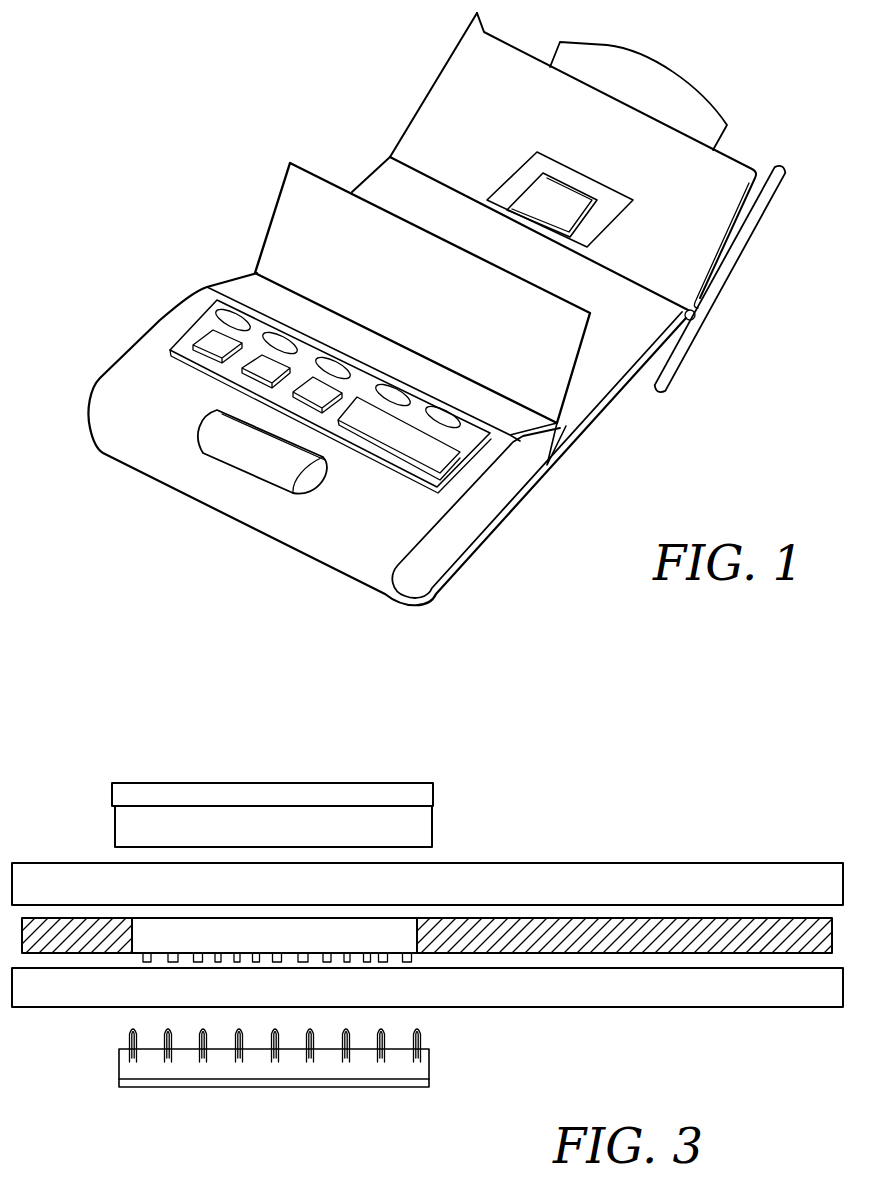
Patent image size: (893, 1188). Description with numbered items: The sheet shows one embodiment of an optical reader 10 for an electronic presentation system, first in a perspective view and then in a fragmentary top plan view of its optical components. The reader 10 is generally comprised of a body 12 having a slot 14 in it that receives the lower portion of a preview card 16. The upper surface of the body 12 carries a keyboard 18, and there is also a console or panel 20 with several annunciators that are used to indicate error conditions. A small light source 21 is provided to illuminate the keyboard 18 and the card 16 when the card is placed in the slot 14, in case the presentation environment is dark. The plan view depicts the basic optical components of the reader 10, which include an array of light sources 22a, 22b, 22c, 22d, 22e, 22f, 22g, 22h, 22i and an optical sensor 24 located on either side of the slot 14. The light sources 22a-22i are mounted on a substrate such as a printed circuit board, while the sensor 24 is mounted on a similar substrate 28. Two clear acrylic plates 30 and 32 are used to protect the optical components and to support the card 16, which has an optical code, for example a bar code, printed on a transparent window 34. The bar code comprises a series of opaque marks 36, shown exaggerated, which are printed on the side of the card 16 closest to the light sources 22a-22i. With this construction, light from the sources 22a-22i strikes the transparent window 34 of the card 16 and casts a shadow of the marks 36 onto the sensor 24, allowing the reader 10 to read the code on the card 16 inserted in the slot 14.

In FIG. 1, the optical reader 10 is at (209, 204).
In FIG. 1, the body 12 is at (183, 302).
In FIG. 1, the slot 14 is at (565, 450).
In FIG. 1, the preview card 16 is at (278, 203).
In FIG. 3, the preview card 16 is at (660, 916).
In FIG. 1, the keyboard 18 is at (393, 525).
In FIG. 1, the console or panel 20 is at (722, 116).
In FIG. 1, the light source 21 is at (228, 412).
In FIG. 3, the light source 22a is at (120, 1057).
In FIG. 3, the light source 22b is at (163, 1053).
In FIG. 3, the light source 22c is at (197, 1053).
In FIG. 3, the light source 22d is at (233, 1053).
In FIG. 3, the light source 22e is at (270, 1053).
In FIG. 3, the light source 22f is at (308, 1053).
In FIG. 3, the light source 22g is at (347, 1053).
In FIG. 3, the light source 22h is at (383, 1053).
In FIG. 3, the light source 22i is at (420, 1057).
In FIG. 3, the optical sensor 24 is at (433, 835).
In FIG. 3, the substrate 28 is at (433, 797).
In FIG. 3, the clear plate 30 is at (728, 1007).
In FIG. 3, the clear plate 32 is at (593, 863).
In FIG. 3, the transparent window 34 is at (150, 915).
In FIG. 3, the opaque marks 36 is at (147, 962).